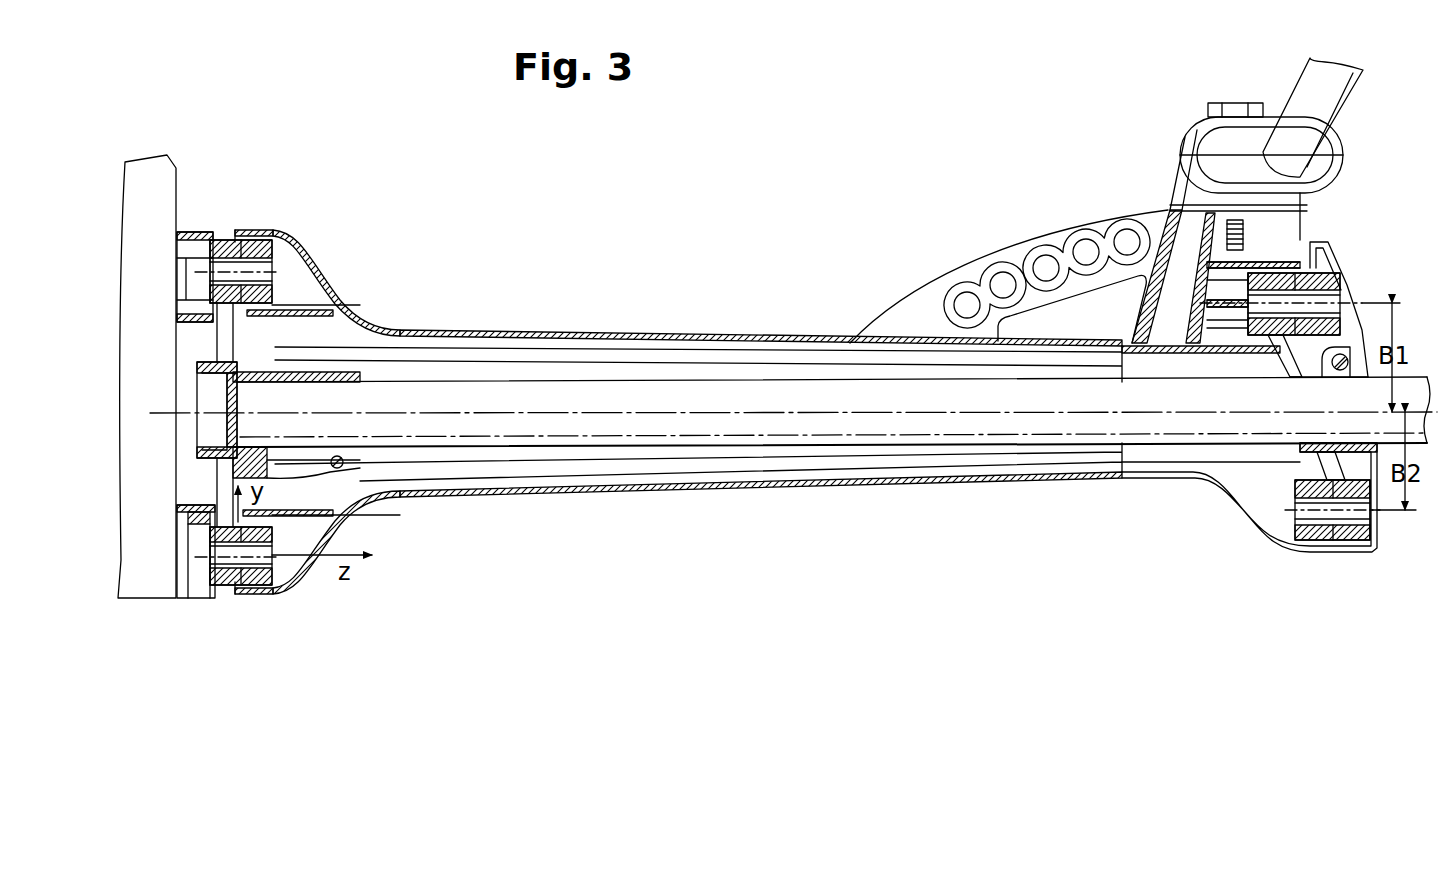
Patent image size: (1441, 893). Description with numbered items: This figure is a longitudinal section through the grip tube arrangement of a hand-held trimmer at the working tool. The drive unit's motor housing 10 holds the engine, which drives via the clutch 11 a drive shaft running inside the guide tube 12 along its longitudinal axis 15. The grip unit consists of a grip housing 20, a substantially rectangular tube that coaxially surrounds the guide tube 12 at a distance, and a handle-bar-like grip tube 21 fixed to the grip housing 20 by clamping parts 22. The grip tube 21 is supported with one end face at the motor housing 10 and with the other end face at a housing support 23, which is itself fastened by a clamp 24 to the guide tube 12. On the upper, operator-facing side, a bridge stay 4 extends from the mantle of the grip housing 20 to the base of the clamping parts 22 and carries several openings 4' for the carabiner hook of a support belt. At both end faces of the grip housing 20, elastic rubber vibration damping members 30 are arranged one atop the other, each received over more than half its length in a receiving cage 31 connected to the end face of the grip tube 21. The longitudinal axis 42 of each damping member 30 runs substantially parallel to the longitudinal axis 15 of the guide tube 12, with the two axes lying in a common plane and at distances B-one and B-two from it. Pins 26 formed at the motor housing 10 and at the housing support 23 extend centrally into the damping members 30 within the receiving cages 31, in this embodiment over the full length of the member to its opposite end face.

The bridge stay 4 is at (1023, 236).
The openings 4' is at (1035, 235).
The motor housing 10 is at (161, 572).
The clutch 11 is at (195, 238).
The guide tube 12 is at (457, 434).
The longitudinal axis 15 is at (583, 413).
The grip housing 20 is at (533, 332).
The grip tube 21 is at (1312, 93).
The clamping parts 22 is at (1177, 173).
The housing support 23 is at (1360, 290).
The clamp 24 is at (1357, 363).
The pins 26 is at (263, 268).
The vibration damping members 30 is at (262, 235).
The receiving cage 31 is at (257, 588).
The longitudinal axis 42 is at (247, 240).